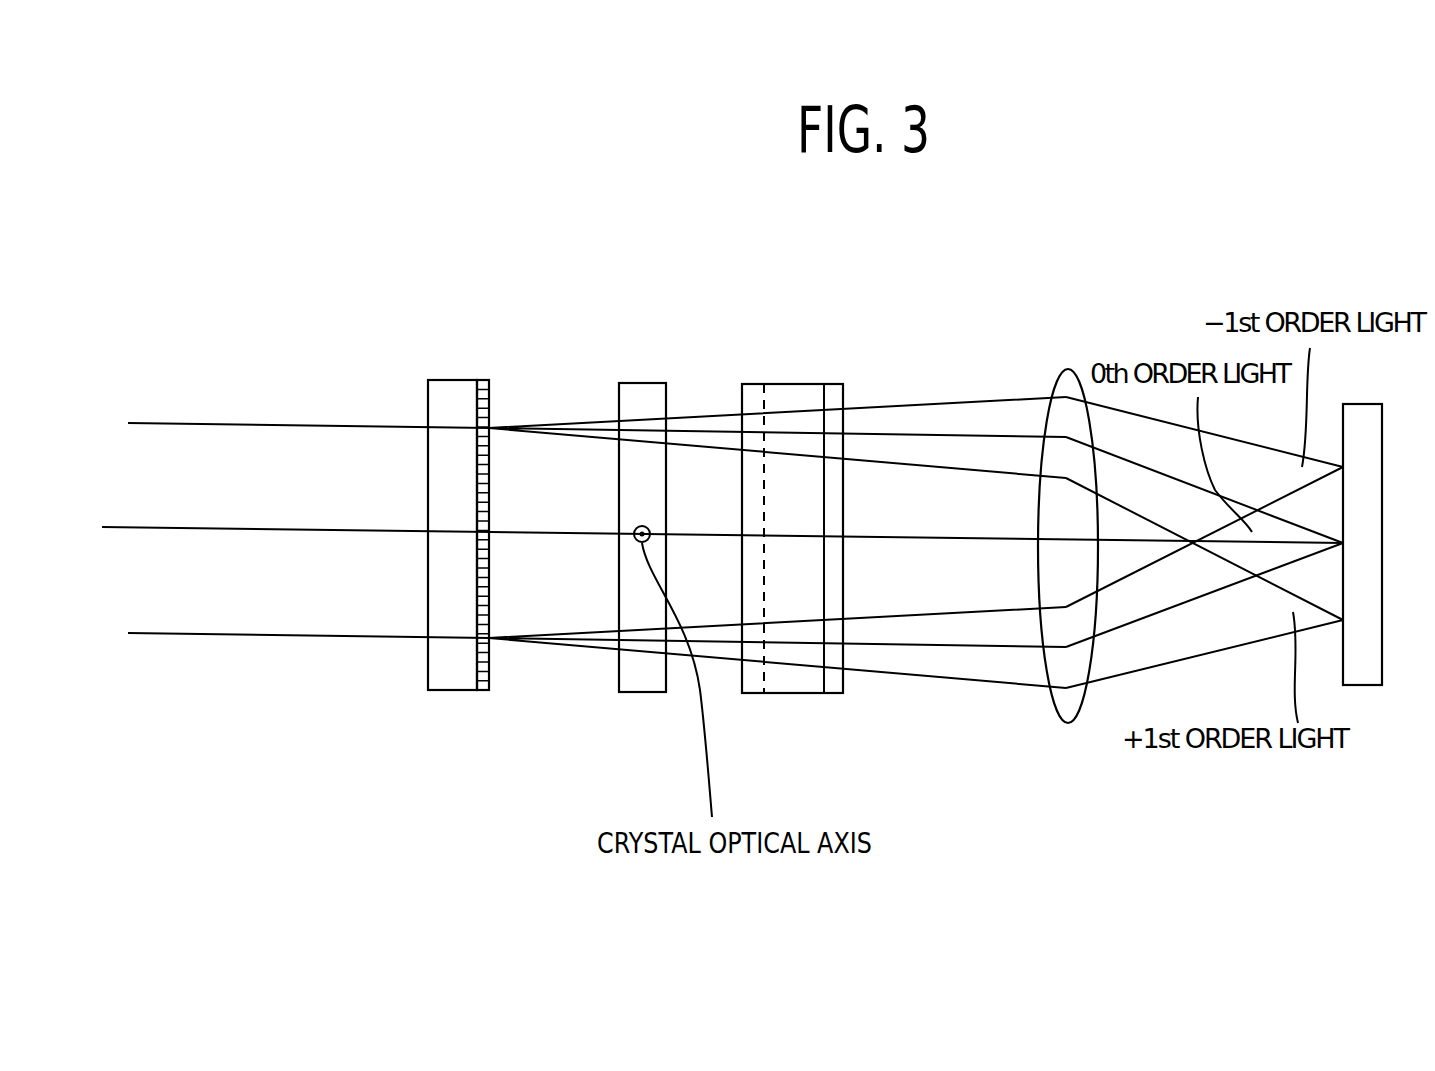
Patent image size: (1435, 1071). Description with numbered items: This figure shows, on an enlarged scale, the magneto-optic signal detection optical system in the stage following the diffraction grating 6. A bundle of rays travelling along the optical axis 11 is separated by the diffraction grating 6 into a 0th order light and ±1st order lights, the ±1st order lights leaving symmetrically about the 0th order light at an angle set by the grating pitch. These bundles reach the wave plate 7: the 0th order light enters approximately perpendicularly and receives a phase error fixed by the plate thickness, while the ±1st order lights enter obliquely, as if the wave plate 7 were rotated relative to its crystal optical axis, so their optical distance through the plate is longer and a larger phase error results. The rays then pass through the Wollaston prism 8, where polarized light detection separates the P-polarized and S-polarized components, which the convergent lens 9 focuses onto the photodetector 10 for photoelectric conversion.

The diffraction grating 6 is at (452, 678).
The wave plate 7 is at (635, 680).
The Wollaston prism 8 is at (810, 682).
The convergent lens 9 is at (1082, 700).
The photodetector 10 is at (1358, 688).
The optical axis 11 is at (255, 532).